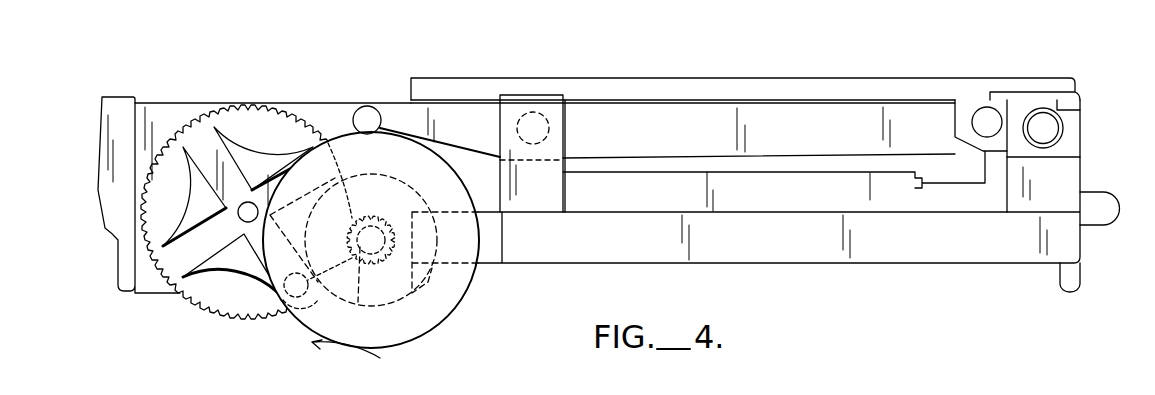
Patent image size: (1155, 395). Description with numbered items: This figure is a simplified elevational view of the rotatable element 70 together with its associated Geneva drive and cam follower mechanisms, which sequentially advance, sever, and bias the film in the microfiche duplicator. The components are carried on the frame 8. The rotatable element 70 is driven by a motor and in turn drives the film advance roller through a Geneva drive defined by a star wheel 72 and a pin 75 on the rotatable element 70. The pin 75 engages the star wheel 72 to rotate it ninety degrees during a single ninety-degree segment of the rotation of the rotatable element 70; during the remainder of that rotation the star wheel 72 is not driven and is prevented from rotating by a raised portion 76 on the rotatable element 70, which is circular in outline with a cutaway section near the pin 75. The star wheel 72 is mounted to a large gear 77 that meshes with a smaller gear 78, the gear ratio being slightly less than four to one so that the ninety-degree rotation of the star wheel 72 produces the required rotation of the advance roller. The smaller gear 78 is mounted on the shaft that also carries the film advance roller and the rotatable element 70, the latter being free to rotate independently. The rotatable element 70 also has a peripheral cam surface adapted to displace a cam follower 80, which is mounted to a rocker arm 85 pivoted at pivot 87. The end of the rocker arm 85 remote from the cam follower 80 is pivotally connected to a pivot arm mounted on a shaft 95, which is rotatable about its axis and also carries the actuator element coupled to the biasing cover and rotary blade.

The frame 8 is at (828, 250).
The rotatable element 70 is at (477, 295).
The star wheel 72 is at (235, 256).
The pin 75 is at (303, 322).
The raised portion 76 is at (398, 305).
The large gear 77 is at (240, 106).
The smaller gear 78 is at (368, 214).
The cam follower 80 is at (366, 107).
The rocker arm 85 is at (692, 122).
The pivot 87 is at (533, 111).
The shaft 95 is at (1046, 121).